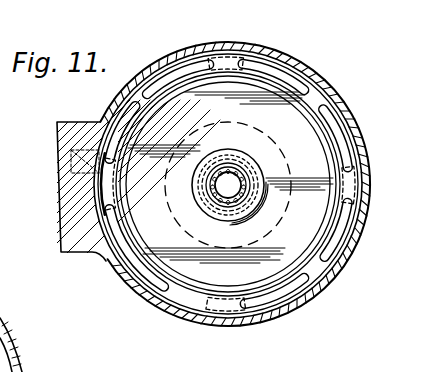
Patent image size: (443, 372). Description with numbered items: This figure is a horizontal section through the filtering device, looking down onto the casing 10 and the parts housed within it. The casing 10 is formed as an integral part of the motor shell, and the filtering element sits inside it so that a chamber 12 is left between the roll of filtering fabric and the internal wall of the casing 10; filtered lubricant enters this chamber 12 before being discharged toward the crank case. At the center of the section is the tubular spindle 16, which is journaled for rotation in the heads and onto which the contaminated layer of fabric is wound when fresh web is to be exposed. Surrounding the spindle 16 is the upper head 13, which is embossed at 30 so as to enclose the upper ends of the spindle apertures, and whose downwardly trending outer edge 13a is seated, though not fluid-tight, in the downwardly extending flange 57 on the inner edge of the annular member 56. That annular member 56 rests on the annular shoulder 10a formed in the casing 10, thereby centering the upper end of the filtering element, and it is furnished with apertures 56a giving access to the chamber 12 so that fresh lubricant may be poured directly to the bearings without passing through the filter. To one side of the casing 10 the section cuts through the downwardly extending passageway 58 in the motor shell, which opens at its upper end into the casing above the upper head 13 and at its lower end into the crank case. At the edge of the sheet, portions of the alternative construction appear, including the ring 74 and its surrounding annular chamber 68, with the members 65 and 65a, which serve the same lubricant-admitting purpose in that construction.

The casing 10 is at (293, 53).
The annular shoulder 10a is at (362, 173).
The chamber 12 is at (252, 328).
The upper head 13 is at (320, 154).
The downwardly trending outer edge 13a is at (316, 106).
The tubular spindle 16 is at (236, 172).
The emboss 30 is at (255, 212).
The annular member 56 is at (243, 58).
The apertures 56a is at (340, 140).
The downwardly extending flange 57 is at (342, 196).
The passageway 58 is at (58, 174).
The ring 65 is at (12, 324).
The ring portion 65a is at (8, 339).
The annular chamber 68 is at (20, 352).
The ring 74 is at (0, 312).